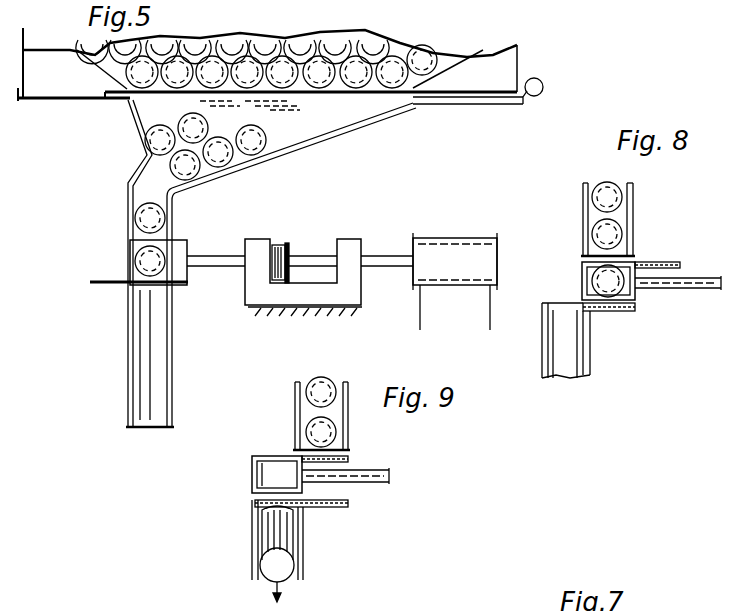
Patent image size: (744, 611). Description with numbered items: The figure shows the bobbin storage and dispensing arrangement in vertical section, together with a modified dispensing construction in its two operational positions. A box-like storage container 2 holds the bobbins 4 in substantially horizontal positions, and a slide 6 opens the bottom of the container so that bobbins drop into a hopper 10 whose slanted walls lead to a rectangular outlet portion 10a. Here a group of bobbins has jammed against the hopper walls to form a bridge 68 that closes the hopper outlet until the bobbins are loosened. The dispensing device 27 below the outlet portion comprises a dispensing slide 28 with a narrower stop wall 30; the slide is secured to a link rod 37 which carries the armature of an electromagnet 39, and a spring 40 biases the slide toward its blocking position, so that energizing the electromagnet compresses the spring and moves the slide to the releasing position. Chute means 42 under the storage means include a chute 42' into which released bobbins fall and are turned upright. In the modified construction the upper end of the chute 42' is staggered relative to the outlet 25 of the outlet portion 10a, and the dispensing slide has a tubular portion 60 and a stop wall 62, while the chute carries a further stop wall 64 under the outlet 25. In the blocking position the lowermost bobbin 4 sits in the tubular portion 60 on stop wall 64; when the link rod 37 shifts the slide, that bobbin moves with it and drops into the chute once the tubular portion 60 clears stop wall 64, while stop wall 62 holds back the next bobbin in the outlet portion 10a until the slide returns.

In FIG. 5, the storage container 2 is at (488, 70).
In FIG. 5, the slide 6 is at (303, 98).
In FIG. 5, the hopper 10 is at (360, 108).
In FIG. 8, the outlet portion 10a is at (633, 205).
In FIG. 5, the bridge 68 is at (235, 157).
In FIG. 5, the stop wall 30 is at (172, 232).
In FIG. 5, the dispensing slide 28 is at (192, 284).
In FIG. 5, the spring 40 is at (282, 243).
In FIG. 5, the electromagnet 39 is at (430, 246).
In FIG. 5, the dispensing device 27 is at (222, 322).
In FIG. 5, the chute means 42 is at (174, 355).
In FIG. 8, the chute 42' is at (545, 340).
In FIG. 8, the outlet 25 is at (583, 219).
In FIG. 8, the tubular portion 60 is at (635, 262).
In FIG. 9, the tubular portion 60 is at (252, 468).
In FIG. 8, the stop wall 62 is at (680, 262).
In FIG. 9, the stop wall 62 is at (350, 462).
In FIG. 8, the stop wall 64 is at (618, 312).
In FIG. 9, the stop wall 64 is at (323, 508).
In FIG. 8, the bobbin 4 is at (596, 282).
In FIG. 9, the bobbin 4 is at (290, 578).
In FIG. 8, the link rod 37 is at (703, 290).